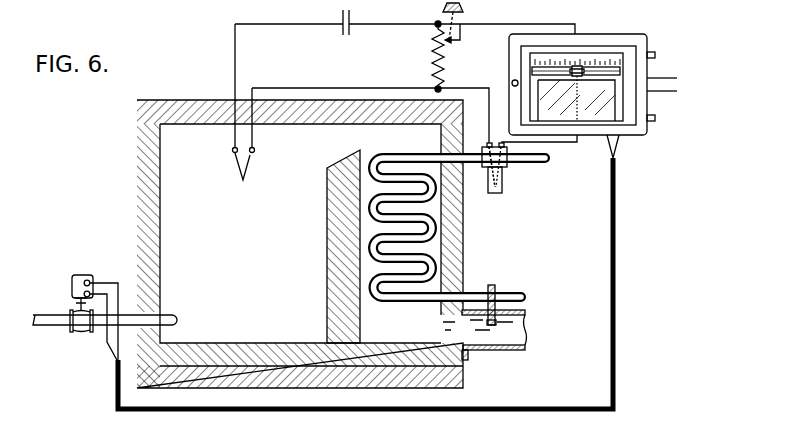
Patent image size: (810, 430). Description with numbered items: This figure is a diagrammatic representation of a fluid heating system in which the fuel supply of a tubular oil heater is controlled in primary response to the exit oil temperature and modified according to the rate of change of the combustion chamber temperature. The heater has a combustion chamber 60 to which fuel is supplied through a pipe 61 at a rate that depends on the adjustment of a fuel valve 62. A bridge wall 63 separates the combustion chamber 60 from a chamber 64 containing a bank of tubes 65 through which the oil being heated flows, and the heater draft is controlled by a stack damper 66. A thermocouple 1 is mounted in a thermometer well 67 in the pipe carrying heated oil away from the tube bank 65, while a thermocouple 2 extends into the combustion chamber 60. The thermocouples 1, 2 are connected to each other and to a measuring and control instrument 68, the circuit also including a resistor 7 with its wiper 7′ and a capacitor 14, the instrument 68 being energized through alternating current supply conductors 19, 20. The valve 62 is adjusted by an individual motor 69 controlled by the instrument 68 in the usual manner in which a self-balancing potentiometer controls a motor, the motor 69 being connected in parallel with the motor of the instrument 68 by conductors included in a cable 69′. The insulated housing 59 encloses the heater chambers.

The thermocouple 1 is at (492, 180).
The thermocouple 2 is at (247, 165).
The potentiometer resistor 7 is at (432, 63).
The potentiometer wiper 7′ is at (458, 42).
The capacitor 14 is at (347, 38).
The alternating current supply conductor 19 is at (664, 77).
The alternating current supply conductor 20 is at (665, 92).
The insulated housing 59 is at (137, 212).
The combustion chamber 60 is at (239, 255).
The pipe 61 is at (50, 314).
The fuel valve 62 is at (80, 333).
The bridge wall 63 is at (330, 230).
The chamber 64 is at (399, 322).
The bank of tubes 65 is at (440, 224).
The stack damper 66 is at (495, 286).
The thermometer well 67 is at (502, 178).
The measuring and control instrument 68 is at (612, 36).
The motor 69 is at (77, 275).
The cable 69′ is at (616, 275).